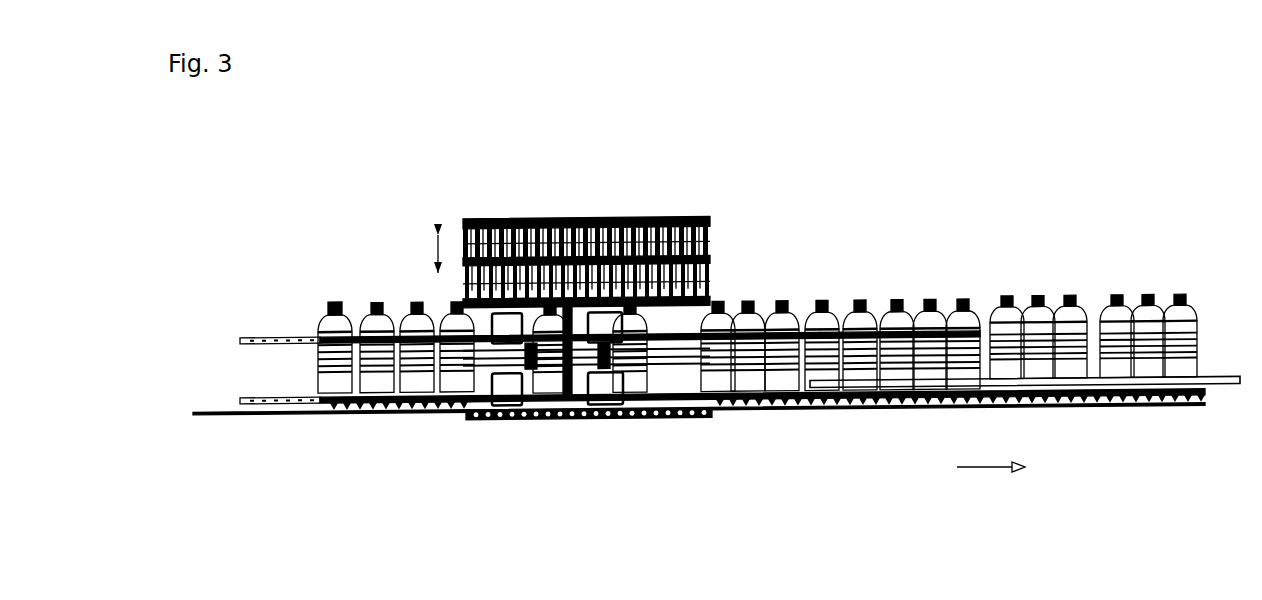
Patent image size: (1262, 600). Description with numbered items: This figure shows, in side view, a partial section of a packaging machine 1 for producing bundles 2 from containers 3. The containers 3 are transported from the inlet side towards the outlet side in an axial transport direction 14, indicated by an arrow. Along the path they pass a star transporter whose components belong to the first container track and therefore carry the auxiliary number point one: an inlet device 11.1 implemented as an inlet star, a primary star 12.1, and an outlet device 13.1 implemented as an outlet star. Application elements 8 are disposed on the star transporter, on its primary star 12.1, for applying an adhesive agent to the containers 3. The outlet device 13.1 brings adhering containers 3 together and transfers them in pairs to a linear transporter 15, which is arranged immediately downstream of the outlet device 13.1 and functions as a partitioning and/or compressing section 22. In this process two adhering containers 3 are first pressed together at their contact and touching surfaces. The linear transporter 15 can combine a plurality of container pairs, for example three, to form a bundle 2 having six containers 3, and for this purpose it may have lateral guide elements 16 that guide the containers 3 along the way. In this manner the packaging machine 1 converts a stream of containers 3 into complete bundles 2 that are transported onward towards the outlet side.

The packaging machine 1 is at (753, 160).
The bundle 2 is at (1150, 294).
The container 3 is at (322, 300).
The application element 8 is at (600, 342).
The inlet device 11.1 is at (292, 398).
The primary star 12.1 is at (592, 214).
The outlet device 13.1 is at (808, 318).
The transport direction 14 is at (991, 455).
The linear transporter 15 is at (882, 410).
The lateral guide element 16 is at (1228, 386).
The partitioning and/or compressing section 22 is at (955, 235).